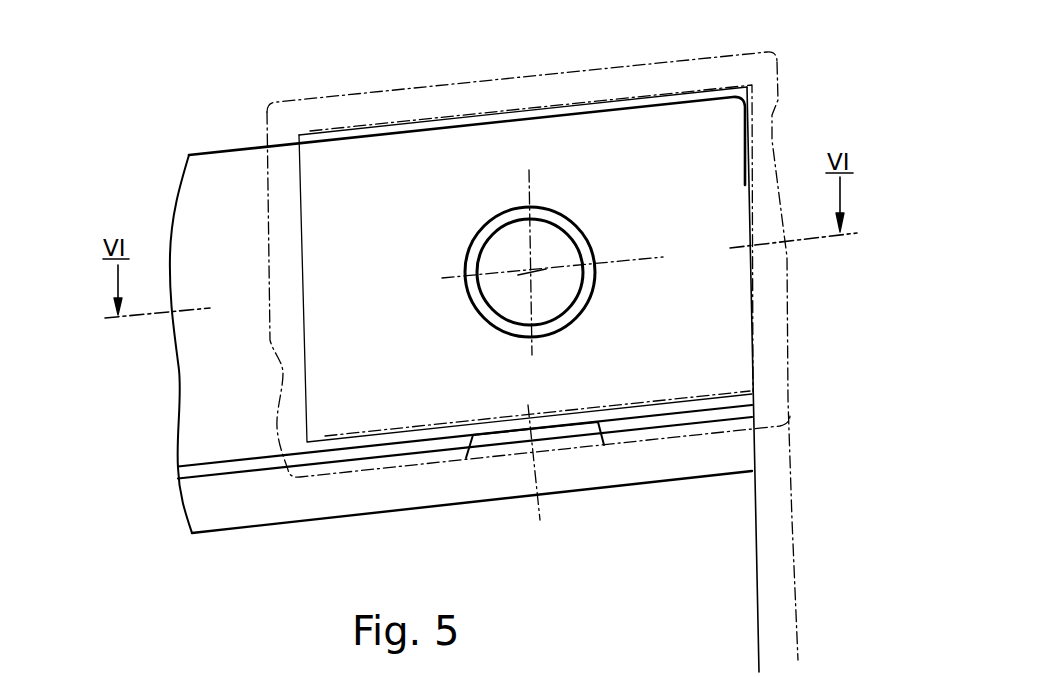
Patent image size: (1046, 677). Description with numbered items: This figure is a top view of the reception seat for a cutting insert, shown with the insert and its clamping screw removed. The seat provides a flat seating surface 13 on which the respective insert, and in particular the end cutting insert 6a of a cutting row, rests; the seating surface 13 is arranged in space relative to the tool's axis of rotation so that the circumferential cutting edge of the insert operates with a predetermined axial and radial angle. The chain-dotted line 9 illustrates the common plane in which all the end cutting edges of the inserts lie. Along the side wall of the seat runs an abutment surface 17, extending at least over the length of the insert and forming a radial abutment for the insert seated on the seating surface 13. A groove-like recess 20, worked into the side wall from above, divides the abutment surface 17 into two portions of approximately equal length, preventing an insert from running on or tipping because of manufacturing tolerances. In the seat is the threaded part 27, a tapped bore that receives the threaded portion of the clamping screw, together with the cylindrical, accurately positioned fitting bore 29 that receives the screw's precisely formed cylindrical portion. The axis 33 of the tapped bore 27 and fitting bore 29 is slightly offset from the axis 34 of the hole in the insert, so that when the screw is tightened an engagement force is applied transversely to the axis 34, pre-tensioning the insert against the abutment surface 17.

The cutting insert 6a is at (714, 72).
The chain-dotted line 9 is at (799, 611).
The seating surface 13 is at (234, 419).
The abutment surface 17 is at (708, 418).
The groove-like recess 20 is at (571, 437).
The threaded part 27 is at (563, 253).
The fitting bore 29 is at (596, 289).
The axis 33 is at (532, 278).
The axis 34 is at (532, 267).